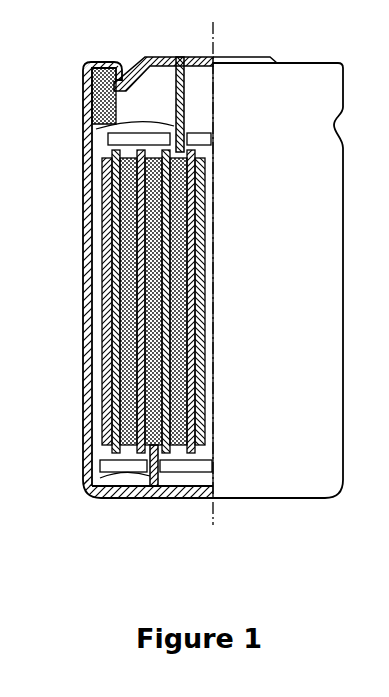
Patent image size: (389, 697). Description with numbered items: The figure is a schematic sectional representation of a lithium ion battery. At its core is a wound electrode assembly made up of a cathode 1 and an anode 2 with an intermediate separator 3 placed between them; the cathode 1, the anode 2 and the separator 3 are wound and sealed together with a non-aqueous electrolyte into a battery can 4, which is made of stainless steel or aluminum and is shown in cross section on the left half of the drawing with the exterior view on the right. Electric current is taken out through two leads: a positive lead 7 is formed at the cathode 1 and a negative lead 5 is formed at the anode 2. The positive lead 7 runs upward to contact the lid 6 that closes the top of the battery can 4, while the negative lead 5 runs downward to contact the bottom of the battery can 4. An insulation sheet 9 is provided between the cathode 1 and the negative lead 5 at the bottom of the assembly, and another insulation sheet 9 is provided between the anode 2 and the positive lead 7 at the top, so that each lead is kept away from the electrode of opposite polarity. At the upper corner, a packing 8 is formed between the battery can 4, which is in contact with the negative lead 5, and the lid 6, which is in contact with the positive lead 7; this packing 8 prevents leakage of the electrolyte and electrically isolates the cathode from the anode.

The cathode 1 is at (180, 450).
The anode 2 is at (101, 341).
The separator 3 is at (100, 448).
The battery can 4 is at (84, 284).
The negative lead 5 is at (92, 489).
The lid 6 is at (262, 56).
The positive lead 7 is at (96, 129).
The packing 8 is at (126, 72).
The insulation sheet 9 is at (108, 139).